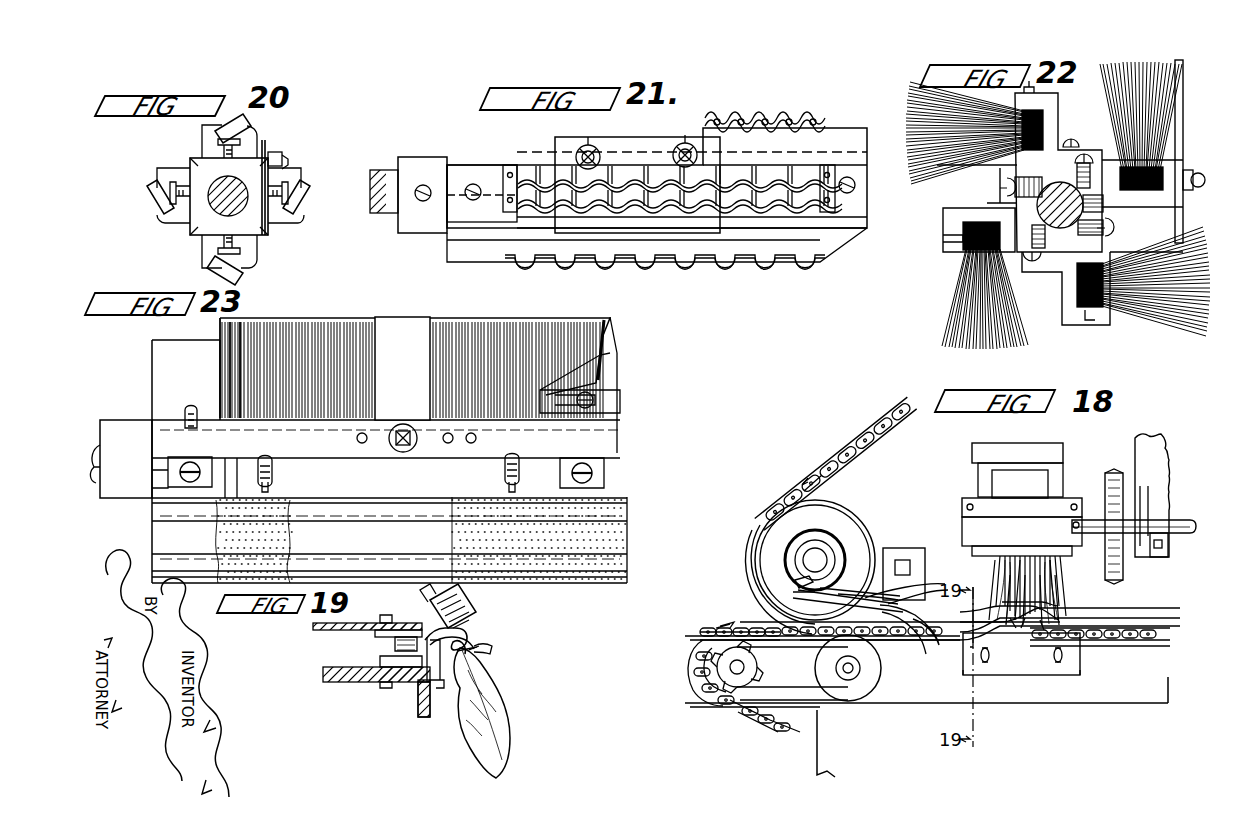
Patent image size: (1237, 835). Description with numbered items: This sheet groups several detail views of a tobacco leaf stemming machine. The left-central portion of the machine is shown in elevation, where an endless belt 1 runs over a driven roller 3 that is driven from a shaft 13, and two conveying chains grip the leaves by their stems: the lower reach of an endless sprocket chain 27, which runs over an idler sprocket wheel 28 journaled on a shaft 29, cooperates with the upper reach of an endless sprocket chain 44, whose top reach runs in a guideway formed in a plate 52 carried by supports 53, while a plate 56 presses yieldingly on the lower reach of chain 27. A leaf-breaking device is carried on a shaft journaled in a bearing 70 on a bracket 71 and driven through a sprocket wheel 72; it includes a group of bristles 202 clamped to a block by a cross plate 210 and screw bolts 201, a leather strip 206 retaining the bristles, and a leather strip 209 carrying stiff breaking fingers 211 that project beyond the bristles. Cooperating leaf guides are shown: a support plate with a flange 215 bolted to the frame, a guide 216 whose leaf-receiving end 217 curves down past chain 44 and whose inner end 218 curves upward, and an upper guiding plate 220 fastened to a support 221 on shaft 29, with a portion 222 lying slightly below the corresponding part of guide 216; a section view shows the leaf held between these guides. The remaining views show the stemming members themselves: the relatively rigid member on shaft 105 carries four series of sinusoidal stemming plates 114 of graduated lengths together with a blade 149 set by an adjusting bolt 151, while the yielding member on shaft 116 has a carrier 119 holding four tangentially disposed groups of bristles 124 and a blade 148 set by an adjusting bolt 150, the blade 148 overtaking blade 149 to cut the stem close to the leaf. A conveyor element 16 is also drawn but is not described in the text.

In FIG. 18, the endless belt 1 is at (700, 710).
In FIG. 18, the driven roller 3 is at (868, 688).
In FIG. 18, the shaft 13 is at (744, 667).
In FIG. 18, the conveyor 16 is at (1142, 642).
In FIG. 18, the endless sprocket chain 27 is at (848, 452).
In FIG. 18, the idler sprocket wheel 28 is at (847, 520).
In FIG. 18, the shaft 29 is at (814, 553).
In FIG. 18, the endless sprocket chain 44 is at (700, 654).
In FIG. 19, the plate 52 is at (400, 656).
In FIG. 19, the supports 53 is at (356, 685).
In FIG. 19, the plate 56 is at (418, 600).
In FIG. 18, the bearing 70 is at (1090, 518).
In FIG. 18, the bracket 71 is at (1143, 560).
In FIG. 18, the sprocket wheel 72 is at (1114, 468).
In FIG. 20, the shaft 105 is at (240, 205).
In FIG. 21, the shaft 105 is at (392, 182).
In FIG. 20, the stemming plates 114 is at (238, 118).
In FIG. 21, the stemming plates 114 is at (651, 122).
In FIG. 22, the shaft 116 is at (1050, 203).
In FIG. 23, the shaft 116 is at (100, 428).
In FIG. 22, the carrier 119 is at (1082, 300).
In FIG. 22, the group of bristles 124 is at (915, 98).
In FIG. 23, the group of bristles 124 is at (500, 340).
In FIG. 22, the blade 148 is at (1184, 140).
In FIG. 23, the blade 148 is at (400, 330).
In FIG. 20, the blade 149 is at (266, 146).
In FIG. 21, the blade 149 is at (555, 145).
In FIG. 22, the adjusting bolt 150 is at (1211, 156).
In FIG. 23, the adjusting bolt 150 is at (403, 452).
In FIG. 20, the adjusting bolt 151 is at (283, 160).
In FIG. 21, the adjusting bolt 151 is at (582, 142).
In FIG. 18, the screw bolts 201 is at (962, 500).
In FIG. 18, the group of bristles 202 is at (1068, 578).
In FIG. 18, the leather strip 206 is at (985, 552).
In FIG. 18, the leather strip 209 is at (1000, 482).
In FIG. 18, the cross plate 210 is at (1000, 530).
In FIG. 18, the breaking fingers 211 is at (1010, 567).
In FIG. 19, the supporting flange 215 is at (448, 700).
In FIG. 18, the supporting flange 215 is at (1010, 672).
In FIG. 19, the guide 216 is at (462, 636).
In FIG. 18, the guide 216 is at (1072, 604).
In FIG. 18, the leaf-receiving end 217 is at (900, 650).
In FIG. 18, the upwardly curved inner end 218 is at (1180, 596).
In FIG. 18, the guiding plate 220 is at (855, 555).
In FIG. 18, the support 221 is at (790, 585).
In FIG. 19, the portion of the guiding plate 222 is at (478, 656).
In FIG. 18, the portion of the guiding plate 222 is at (1005, 640).